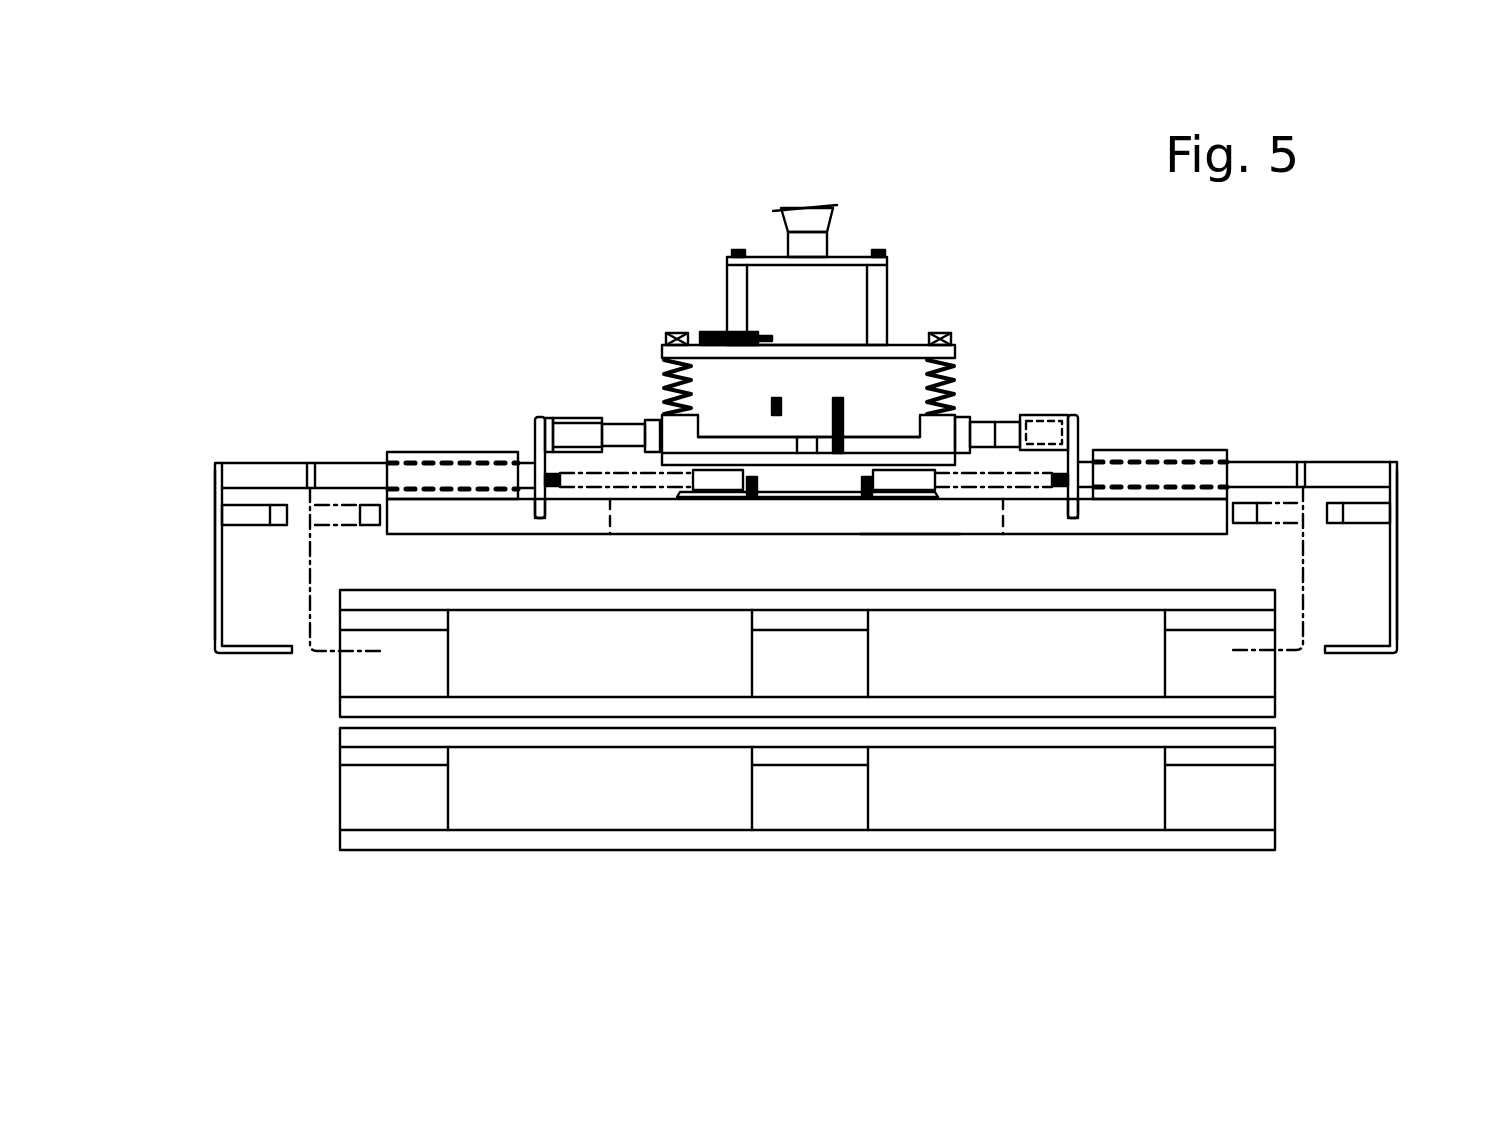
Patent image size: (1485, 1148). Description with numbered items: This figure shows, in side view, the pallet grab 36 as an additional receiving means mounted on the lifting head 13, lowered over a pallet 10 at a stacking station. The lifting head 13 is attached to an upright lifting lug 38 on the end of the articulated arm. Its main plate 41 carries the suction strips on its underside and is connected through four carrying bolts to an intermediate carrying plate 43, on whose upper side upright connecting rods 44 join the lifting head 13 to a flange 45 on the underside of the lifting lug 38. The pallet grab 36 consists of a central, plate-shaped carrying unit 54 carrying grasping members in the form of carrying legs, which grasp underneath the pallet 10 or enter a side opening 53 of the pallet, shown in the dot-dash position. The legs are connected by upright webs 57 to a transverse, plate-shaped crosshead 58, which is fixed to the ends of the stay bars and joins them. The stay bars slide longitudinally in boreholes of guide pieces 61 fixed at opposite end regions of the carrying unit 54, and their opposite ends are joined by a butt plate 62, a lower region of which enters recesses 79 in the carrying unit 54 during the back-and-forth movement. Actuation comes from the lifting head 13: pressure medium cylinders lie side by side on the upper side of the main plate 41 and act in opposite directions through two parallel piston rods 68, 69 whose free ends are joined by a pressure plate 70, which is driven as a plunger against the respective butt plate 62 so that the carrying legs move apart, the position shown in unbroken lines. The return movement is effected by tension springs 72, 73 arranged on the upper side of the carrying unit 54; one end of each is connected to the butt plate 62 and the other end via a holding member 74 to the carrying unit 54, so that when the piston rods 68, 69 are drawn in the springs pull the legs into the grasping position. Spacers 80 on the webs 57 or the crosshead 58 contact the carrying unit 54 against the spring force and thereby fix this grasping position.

The pallet 10 is at (322, 690).
The lifting head 13 is at (945, 233).
The pallet grab 36 is at (1215, 405).
The lifting lug 38 is at (812, 227).
The main plate 41 is at (678, 458).
The carrying plate 43 is at (895, 343).
The connecting rods 44 is at (877, 287).
The flange 45 is at (757, 253).
The side opening 53 is at (1262, 667).
The carrying unit 54 is at (906, 556).
The webs 57 is at (705, 332).
The crosshead 58 is at (213, 478).
The guide pieces 61 is at (435, 450).
The butt plate 62 is at (530, 447).
The piston rod 68 is at (650, 422).
The piston rod 69 is at (598, 420).
The pressure plate 70 is at (553, 420).
The tension spring 72 is at (643, 487).
The tension spring 73 is at (965, 483).
The holding member 74 is at (750, 492).
The recesses 79 is at (535, 519).
The spacers 80 is at (247, 513).